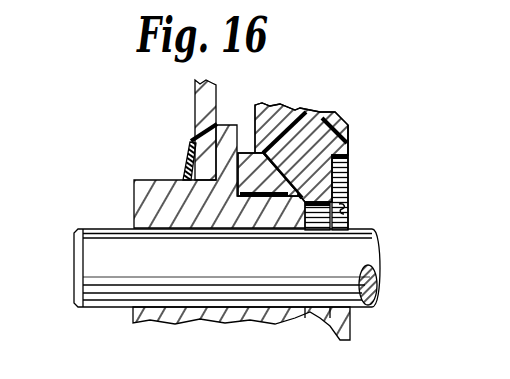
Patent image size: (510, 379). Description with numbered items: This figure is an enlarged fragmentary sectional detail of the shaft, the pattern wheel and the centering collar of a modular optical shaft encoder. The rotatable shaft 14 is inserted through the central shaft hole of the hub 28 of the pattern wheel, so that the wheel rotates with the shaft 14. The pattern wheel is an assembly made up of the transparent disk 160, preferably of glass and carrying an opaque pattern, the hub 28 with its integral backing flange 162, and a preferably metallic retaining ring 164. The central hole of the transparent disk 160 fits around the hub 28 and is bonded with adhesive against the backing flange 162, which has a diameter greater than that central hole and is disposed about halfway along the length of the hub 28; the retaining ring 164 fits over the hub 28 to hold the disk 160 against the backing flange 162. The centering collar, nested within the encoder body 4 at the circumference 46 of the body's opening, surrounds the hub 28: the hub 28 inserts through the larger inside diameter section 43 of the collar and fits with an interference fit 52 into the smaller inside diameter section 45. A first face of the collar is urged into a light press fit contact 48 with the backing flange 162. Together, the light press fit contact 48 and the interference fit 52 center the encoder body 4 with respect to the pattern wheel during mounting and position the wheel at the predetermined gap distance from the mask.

The encoder body 4 is at (348, 140).
The shaft 14 is at (74, 268).
The hub 28 is at (137, 207).
The larger inside diameter section 43 is at (283, 113).
The smaller inside diameter section 45 is at (310, 190).
The circumference 46 is at (348, 214).
The light press fit contact 48 is at (248, 157).
The interference fit 52 is at (346, 226).
The transparent disk 160 is at (202, 115).
The backing flange 162 is at (233, 124).
The retaining ring 164 is at (188, 160).